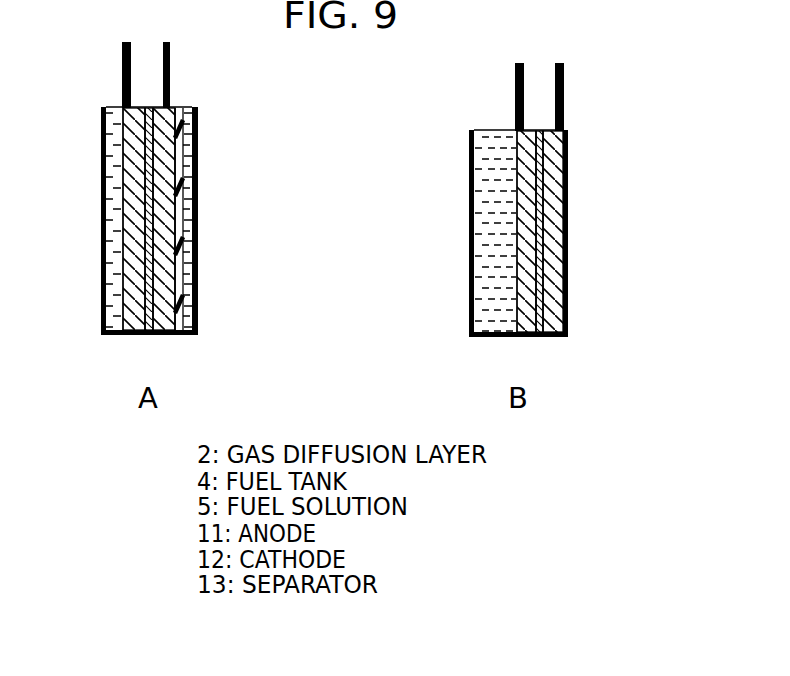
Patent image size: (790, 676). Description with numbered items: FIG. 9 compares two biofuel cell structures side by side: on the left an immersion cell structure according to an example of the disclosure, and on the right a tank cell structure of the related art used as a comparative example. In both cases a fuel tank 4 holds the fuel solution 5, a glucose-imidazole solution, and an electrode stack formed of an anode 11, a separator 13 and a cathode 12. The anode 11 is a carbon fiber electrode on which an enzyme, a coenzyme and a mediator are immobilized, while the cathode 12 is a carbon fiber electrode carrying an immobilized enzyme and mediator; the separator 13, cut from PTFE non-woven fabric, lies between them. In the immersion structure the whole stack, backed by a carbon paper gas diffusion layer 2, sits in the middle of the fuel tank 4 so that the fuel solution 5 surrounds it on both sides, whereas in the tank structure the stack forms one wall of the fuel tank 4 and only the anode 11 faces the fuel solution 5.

The gas diffusion layer 2 is at (178, 137).
The fuel tank 4 is at (198, 206).
The fuel solution 5 is at (103, 130).
The anode 11 is at (132, 211).
The cathode 12 is at (165, 268).
The separator 13 is at (150, 268).